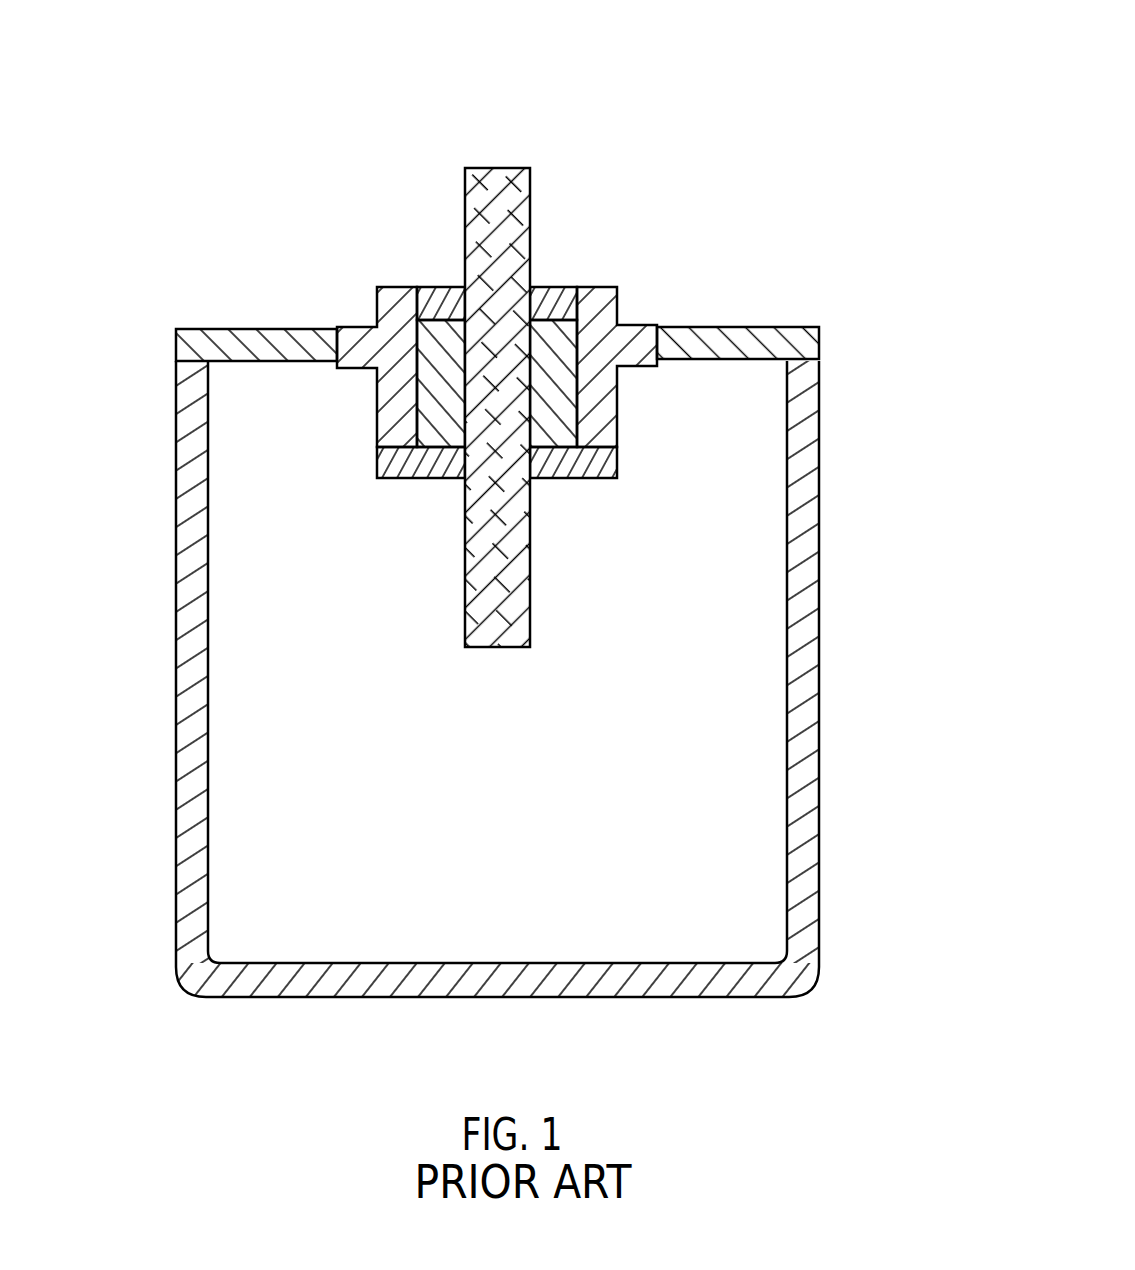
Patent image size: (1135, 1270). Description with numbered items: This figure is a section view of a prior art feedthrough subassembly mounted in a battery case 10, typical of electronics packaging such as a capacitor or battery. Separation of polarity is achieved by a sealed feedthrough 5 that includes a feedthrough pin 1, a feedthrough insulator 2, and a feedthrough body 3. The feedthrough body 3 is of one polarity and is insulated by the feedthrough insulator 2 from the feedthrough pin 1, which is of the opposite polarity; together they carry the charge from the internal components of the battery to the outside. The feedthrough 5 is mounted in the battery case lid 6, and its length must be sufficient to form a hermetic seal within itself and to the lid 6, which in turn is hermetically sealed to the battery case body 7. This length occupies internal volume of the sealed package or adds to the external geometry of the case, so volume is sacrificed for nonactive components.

The feedthrough pin 1 is at (485, 207).
The feedthrough insulator 2 is at (550, 362).
The feedthrough body 3 is at (595, 330).
The sealed feedthrough 5 is at (698, 118).
The battery case lid 6 is at (768, 327).
The battery case body 7 is at (805, 595).
The battery case 10 is at (148, 260).